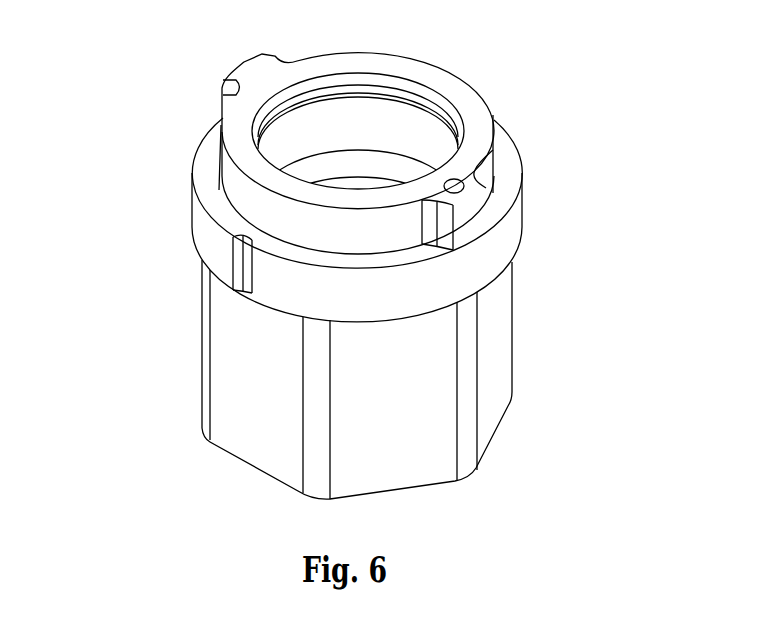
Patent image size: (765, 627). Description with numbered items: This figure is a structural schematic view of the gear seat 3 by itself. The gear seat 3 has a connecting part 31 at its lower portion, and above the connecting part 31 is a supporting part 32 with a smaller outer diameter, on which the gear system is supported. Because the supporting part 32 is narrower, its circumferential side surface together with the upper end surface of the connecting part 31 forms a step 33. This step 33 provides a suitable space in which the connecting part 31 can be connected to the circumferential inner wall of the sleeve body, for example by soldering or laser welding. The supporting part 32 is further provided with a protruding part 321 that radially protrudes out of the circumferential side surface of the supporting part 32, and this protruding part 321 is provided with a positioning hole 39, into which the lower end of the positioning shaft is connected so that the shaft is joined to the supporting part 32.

The gear seat 3 is at (168, 140).
The connecting part 31 is at (513, 217).
The supporting part 32 is at (460, 93).
The step 33 is at (503, 160).
The positioning hole 39 is at (460, 193).
The protruding part 321 is at (463, 227).